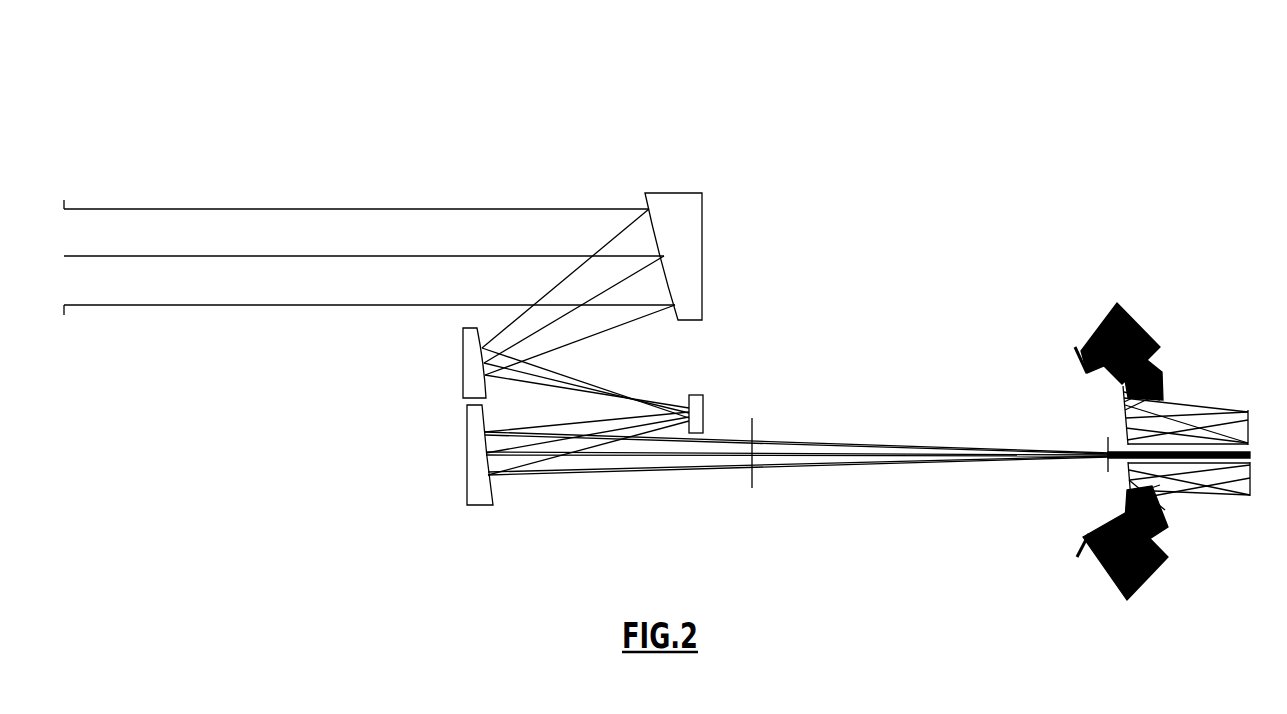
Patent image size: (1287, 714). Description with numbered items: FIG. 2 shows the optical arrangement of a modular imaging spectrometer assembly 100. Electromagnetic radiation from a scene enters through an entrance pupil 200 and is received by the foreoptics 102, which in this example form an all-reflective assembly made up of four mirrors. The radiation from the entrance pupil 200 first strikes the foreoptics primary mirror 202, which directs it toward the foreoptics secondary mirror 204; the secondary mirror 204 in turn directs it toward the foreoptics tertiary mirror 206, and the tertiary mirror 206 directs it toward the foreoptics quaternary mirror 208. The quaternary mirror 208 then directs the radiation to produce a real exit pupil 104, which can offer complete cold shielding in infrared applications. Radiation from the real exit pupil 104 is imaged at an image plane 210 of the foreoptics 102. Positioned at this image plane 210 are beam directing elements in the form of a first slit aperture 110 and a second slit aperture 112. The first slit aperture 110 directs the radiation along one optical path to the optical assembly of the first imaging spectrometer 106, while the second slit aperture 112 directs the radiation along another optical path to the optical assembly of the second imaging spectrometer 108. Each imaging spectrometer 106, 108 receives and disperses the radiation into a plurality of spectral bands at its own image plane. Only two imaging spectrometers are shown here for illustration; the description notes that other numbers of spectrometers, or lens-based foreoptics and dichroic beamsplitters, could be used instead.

The modular imaging spectrometer assembly 100 is at (1024, 74).
The foreoptics 102 is at (782, 288).
The real exit pupil 104 is at (752, 418).
The first imaging spectrometer 106 is at (1180, 560).
The second imaging spectrometer 108 is at (1178, 349).
The first slit aperture 110 is at (1106, 462).
The second slit aperture 112 is at (1108, 437).
The entrance pupil 200 is at (64, 200).
The foreoptics primary mirror 202 is at (685, 193).
The foreoptics secondary mirror 204 is at (463, 334).
The foreoptics tertiary mirror 206 is at (700, 395).
The foreoptics quaternary mirror 208 is at (467, 411).
The image plane 210 is at (1096, 476).